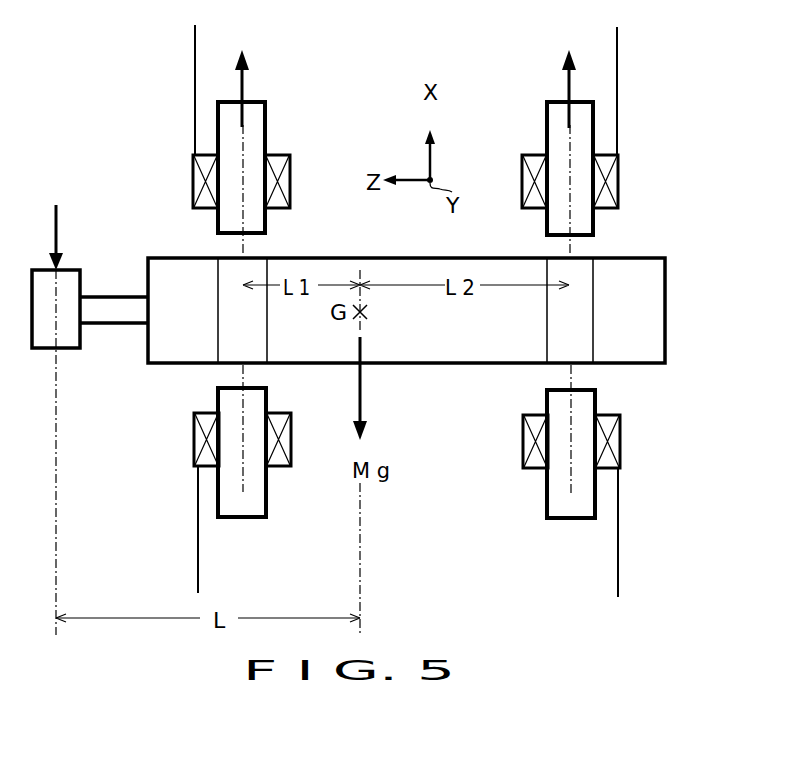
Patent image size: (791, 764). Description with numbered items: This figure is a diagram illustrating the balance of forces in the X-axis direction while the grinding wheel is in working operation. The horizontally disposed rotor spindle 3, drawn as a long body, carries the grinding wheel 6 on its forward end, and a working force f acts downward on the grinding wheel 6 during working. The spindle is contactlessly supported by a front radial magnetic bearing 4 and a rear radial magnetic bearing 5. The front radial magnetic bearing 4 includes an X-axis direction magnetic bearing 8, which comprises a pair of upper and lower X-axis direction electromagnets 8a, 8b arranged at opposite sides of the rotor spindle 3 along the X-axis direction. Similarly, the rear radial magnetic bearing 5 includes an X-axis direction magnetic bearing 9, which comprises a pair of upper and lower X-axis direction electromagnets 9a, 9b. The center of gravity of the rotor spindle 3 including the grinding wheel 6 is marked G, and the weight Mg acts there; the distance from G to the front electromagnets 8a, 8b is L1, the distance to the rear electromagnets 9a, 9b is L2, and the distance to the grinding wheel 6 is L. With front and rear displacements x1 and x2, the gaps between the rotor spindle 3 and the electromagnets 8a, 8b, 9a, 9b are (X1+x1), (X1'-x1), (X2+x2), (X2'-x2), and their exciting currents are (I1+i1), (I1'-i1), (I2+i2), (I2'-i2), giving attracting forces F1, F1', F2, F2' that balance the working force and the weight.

The rotor spindle 3 is at (430, 363).
The front radial magnetic bearing 4 is at (168, 121).
The rear radial magnetic bearing 5 is at (648, 120).
The grinding wheel 6 is at (36, 350).
The X-axis direction magnetic bearing 8 is at (265, 127).
The upper X-axis direction electromagnet 8a is at (265, 218).
The lower X-axis direction electromagnet 8b is at (268, 393).
The X-axis direction magnetic bearing 9 is at (547, 127).
The upper X-axis direction electromagnet 9a is at (547, 222).
The lower X-axis direction electromagnet 9b is at (547, 402).